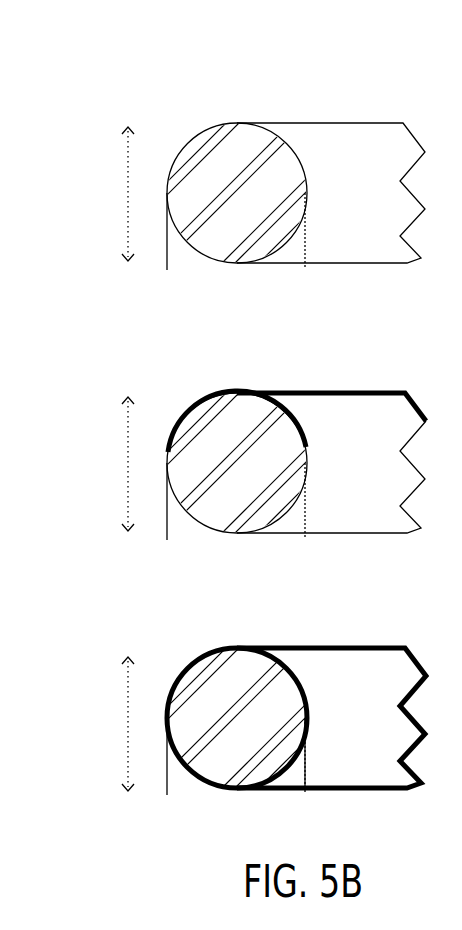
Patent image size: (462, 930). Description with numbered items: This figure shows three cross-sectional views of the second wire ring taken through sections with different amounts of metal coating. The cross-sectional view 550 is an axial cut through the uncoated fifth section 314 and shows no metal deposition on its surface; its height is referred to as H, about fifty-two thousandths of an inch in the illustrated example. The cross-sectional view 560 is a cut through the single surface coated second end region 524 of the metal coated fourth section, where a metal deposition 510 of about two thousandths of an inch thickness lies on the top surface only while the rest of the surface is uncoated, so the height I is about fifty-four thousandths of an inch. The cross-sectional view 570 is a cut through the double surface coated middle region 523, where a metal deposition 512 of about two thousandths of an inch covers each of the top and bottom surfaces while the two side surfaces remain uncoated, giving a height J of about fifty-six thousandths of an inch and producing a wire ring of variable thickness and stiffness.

The cross-sectional view of the uncoated section 550 is at (150, 83).
The uncoated fifth section 314 is at (366, 201).
The cross-sectional view of the single surface coated region 560 is at (150, 343).
The metal deposition 510 is at (330, 389).
The single surface coated second end region 524 is at (366, 464).
The cross-sectional view of the double surface coated region 570 is at (150, 603).
The metal deposition 512 is at (330, 645).
The double surface coated middle region 523 is at (366, 724).